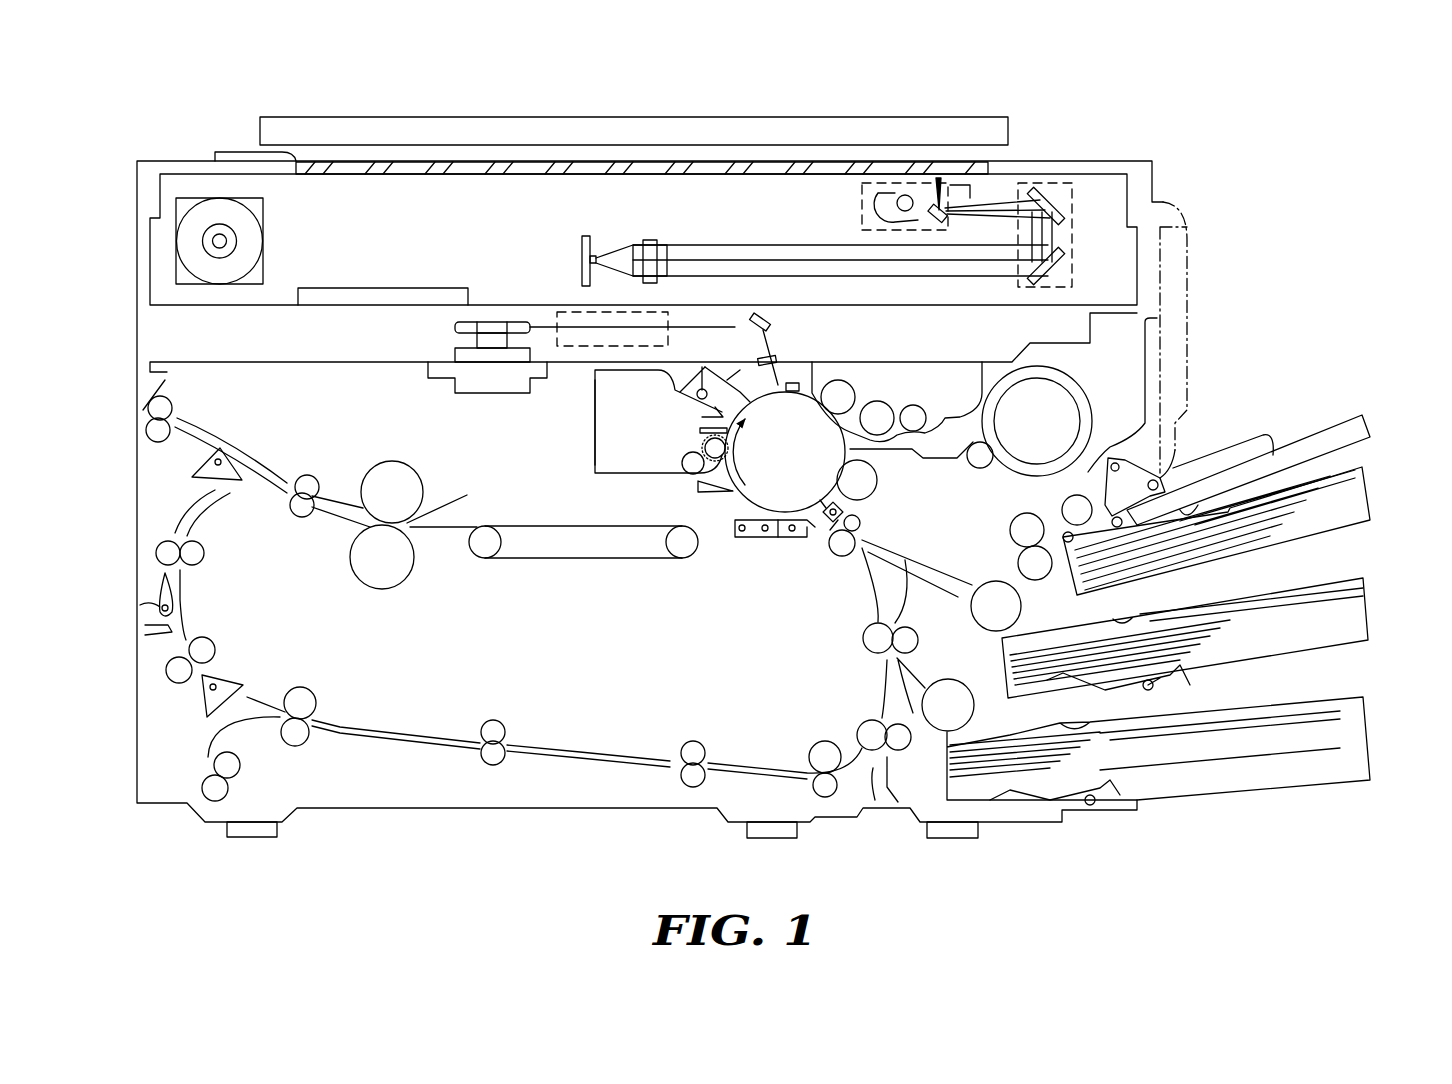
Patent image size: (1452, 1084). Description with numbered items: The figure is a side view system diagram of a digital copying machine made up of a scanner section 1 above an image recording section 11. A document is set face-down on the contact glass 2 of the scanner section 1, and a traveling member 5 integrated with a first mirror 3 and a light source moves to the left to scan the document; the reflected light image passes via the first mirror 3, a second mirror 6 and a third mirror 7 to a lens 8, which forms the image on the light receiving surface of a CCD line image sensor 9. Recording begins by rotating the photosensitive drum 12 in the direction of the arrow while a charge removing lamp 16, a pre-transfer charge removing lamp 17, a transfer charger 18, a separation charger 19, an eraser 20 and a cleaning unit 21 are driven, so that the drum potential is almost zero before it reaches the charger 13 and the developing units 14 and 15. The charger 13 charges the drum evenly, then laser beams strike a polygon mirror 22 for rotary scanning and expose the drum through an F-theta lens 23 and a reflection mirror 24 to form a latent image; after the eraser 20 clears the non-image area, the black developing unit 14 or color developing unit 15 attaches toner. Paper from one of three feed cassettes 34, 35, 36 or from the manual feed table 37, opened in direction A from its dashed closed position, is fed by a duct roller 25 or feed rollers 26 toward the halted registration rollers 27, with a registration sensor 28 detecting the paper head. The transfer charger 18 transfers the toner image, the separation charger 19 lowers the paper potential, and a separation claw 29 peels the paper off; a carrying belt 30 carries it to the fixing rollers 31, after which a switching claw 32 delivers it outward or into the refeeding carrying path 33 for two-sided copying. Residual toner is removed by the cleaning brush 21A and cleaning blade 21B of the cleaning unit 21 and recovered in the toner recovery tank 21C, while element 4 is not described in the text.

The scanner section 1 is at (1133, 193).
The contact glass 2 is at (325, 178).
The first mirror 3 is at (948, 218).
The polygon mirror motor 4 is at (866, 224).
The traveling member 5 is at (862, 193).
The second mirror 6 is at (1062, 212).
The third mirror 7 is at (1055, 280).
The lens 8 is at (650, 245).
The CCD line image sensor 9 is at (591, 250).
The image recording section 11 is at (440, 464).
The photosensitive drum 12 is at (772, 466).
The charger 13 is at (728, 385).
The black developing unit 14 is at (1092, 405).
The color developing unit 15 is at (908, 360).
The charge removing lamp (QL) 16 is at (700, 378).
The pre-transfer charge removing lamp (PTL) 17 is at (828, 532).
The transfer charger 18 is at (778, 538).
The separation charger 19 is at (733, 526).
The eraser 20 is at (792, 383).
The cleaning unit 21 is at (590, 457).
The cleaning brush 21A is at (703, 449).
The cleaning blade 21B is at (697, 429).
The toner recovery tank 21C is at (582, 420).
The polygon mirror 22 is at (455, 328).
The F-theta lens 23 is at (560, 310).
The reflection mirror 24 is at (770, 322).
The duct roller 25 is at (1083, 495).
The feed rollers 26 is at (1020, 524).
The registration rollers 27 is at (845, 557).
The registration sensor 28 is at (877, 491).
The separation claw 29 is at (692, 485).
The carrying belt 30 is at (522, 560).
The fixing rollers 31 is at (388, 460).
The switching claw 32 is at (230, 485).
The refeeding carrying path 33 is at (648, 752).
The feed cassette 34 is at (1350, 535).
The feed cassette 35 is at (1345, 655).
The feed cassette 36 is at (1320, 788).
The manual feed table 37 is at (1190, 297).